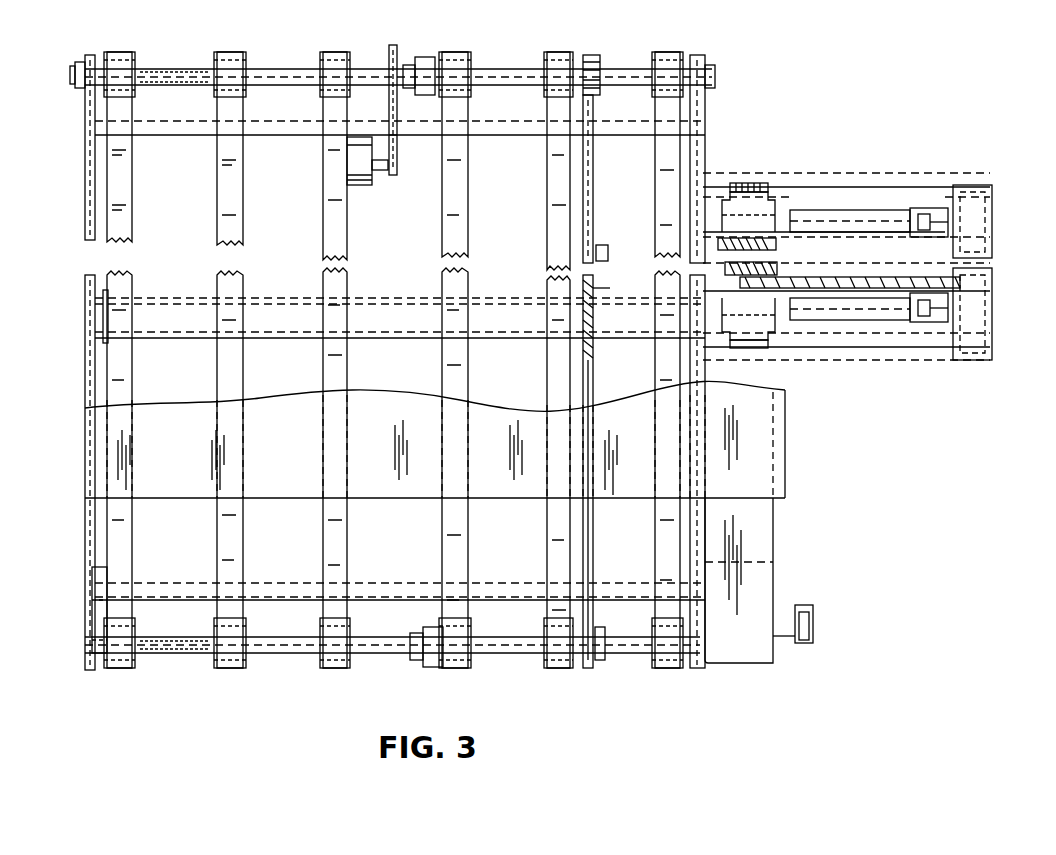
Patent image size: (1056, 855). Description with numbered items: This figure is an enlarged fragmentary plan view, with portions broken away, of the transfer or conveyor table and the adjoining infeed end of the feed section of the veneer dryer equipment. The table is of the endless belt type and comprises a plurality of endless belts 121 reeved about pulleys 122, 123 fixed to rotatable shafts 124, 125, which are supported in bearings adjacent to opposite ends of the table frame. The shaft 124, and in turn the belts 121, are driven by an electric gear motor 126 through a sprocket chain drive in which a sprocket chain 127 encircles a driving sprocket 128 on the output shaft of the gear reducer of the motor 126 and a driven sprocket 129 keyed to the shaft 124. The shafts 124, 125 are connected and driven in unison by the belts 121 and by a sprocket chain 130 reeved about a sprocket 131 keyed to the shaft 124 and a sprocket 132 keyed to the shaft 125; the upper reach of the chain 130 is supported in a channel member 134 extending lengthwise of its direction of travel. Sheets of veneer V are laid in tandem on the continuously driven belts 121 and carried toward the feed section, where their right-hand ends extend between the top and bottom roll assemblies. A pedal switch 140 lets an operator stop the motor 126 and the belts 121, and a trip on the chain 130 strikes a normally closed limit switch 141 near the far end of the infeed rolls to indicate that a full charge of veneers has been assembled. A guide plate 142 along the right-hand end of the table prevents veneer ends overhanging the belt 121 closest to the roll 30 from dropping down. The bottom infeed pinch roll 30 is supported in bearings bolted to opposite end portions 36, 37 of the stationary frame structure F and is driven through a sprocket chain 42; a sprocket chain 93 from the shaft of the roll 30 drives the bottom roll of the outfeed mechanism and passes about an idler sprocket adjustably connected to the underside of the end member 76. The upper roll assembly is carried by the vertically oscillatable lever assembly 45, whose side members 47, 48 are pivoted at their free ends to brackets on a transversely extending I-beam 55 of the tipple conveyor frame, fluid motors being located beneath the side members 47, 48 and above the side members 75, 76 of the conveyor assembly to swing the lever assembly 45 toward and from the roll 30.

The endless belts 121 is at (132, 277).
The pulleys 122 is at (250, 67).
The pulleys 123 is at (217, 664).
The rotatable shaft 124 is at (190, 80).
The rotatable shaft 125 is at (193, 624).
The electric gear motor 126 is at (365, 185).
The sprocket chain 127 is at (393, 144).
The driving sprocket 128 is at (388, 172).
The driven sprocket 129 is at (397, 56).
The sprocket chain 130 is at (594, 108).
The sprocket 131 is at (603, 68).
The sprocket 132 is at (599, 663).
The channel member 134 is at (595, 210).
The pedal switch 140 is at (814, 640).
The limit switch 141 is at (606, 251).
The guide plate 142 is at (765, 548).
The bottom infeed pinch roll 30 is at (778, 267).
The end portion of frame 36 is at (883, 158).
The end portion of frame 37 is at (868, 352).
The sprocket chain 42 is at (782, 248).
The lever assembly 45 is at (890, 210).
The side member 47 is at (887, 222).
The side member 48 is at (907, 310).
The I-beam 55 is at (990, 250).
The side member of conveyor assembly 75 is at (808, 217).
The side member of conveyor assembly 76 is at (824, 310).
The sprocket chain 93 is at (848, 277).
The veneer sheets V is at (373, 464).
The stationary frame structure F is at (51, 151).